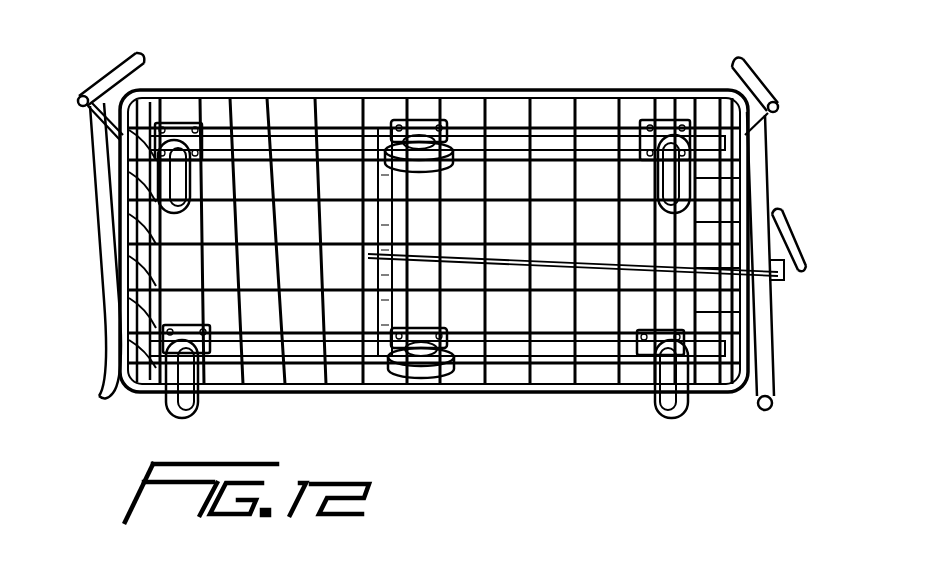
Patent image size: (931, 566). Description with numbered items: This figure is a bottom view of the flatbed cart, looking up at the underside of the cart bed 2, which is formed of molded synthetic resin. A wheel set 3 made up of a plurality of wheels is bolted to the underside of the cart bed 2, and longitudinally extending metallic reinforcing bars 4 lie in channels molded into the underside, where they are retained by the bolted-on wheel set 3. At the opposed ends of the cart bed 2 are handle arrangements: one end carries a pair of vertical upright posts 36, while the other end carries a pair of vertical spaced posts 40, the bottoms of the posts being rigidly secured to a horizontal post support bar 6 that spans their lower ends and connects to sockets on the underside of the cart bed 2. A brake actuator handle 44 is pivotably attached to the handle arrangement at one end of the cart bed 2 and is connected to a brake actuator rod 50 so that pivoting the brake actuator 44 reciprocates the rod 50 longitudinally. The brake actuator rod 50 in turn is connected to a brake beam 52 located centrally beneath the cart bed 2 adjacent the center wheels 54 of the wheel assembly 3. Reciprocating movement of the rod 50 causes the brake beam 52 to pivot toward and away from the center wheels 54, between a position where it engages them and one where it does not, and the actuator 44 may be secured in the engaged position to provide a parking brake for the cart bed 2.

The cart bed 2 is at (603, 87).
The wheel set 3 is at (670, 420).
The reinforcing bars 4 is at (302, 143).
The post support bar 6 is at (103, 290).
The vertical upright posts 36 is at (752, 72).
The vertical spaced posts 40 is at (115, 63).
The brake actuator handle 44 is at (797, 252).
The brake actuator rod 50 is at (757, 280).
The brake beam 52 is at (377, 187).
The center wheels 54 is at (447, 147).